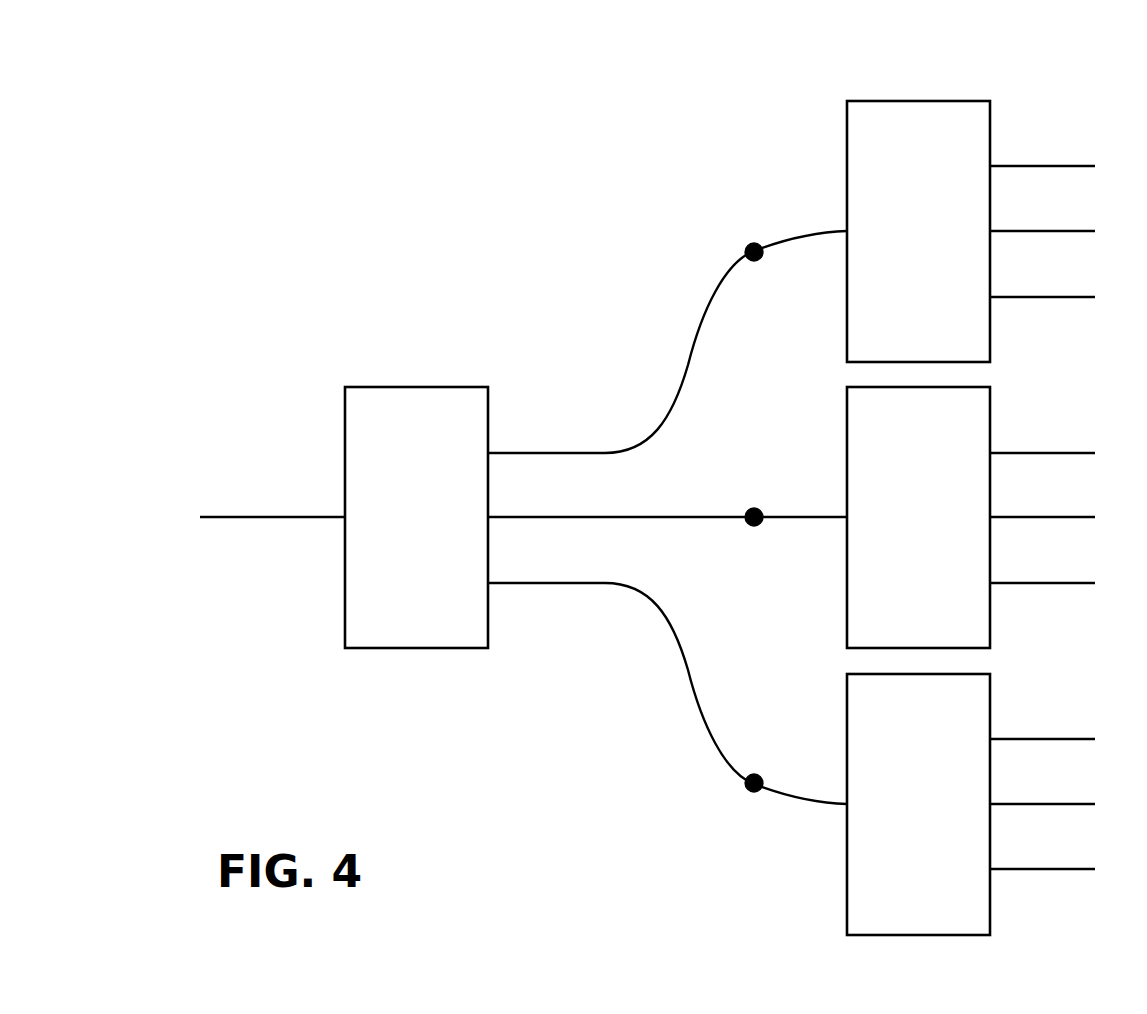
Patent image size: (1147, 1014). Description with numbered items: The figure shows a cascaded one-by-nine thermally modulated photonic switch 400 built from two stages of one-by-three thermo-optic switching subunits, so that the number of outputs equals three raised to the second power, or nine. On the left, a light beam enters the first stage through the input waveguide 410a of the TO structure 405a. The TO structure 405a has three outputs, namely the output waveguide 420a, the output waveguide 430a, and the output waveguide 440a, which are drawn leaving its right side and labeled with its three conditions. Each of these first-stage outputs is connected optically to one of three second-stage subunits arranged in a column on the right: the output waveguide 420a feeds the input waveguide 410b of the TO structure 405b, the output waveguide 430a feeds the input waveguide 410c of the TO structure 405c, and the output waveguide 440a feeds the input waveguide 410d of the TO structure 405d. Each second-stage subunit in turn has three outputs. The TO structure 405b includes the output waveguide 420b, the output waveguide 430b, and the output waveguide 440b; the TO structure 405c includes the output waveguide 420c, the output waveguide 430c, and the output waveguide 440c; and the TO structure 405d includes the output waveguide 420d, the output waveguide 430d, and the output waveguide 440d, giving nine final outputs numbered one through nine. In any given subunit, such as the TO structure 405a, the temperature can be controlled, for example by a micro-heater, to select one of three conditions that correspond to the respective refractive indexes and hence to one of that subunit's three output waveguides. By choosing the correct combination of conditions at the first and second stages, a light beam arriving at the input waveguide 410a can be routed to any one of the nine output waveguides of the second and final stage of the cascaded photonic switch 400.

The cascaded 1×9 thermally modulated photonic switch 400 is at (541, 100).
The TO structure 405a is at (470, 387).
The TO structure 405b is at (977, 101).
The TO structure 405c is at (845, 452).
The TO structure 405d is at (845, 757).
The input waveguide 410a is at (279, 517).
The input waveguide 410b is at (830, 230).
The input waveguide 410c is at (818, 519).
The input waveguide 410d is at (833, 805).
The output waveguide 420a is at (572, 452).
The output waveguide 420b is at (1017, 166).
The output waveguide 420c is at (1017, 453).
The output waveguide 420d is at (1017, 739).
The output waveguide 430a is at (577, 518).
The output waveguide 430b is at (1000, 230).
The output waveguide 430c is at (1000, 516).
The output waveguide 430d is at (1000, 803).
The output waveguide 440a is at (520, 585).
The output waveguide 440b is at (1048, 299).
The output waveguide 440c is at (1048, 585).
The output waveguide 440d is at (1048, 871).